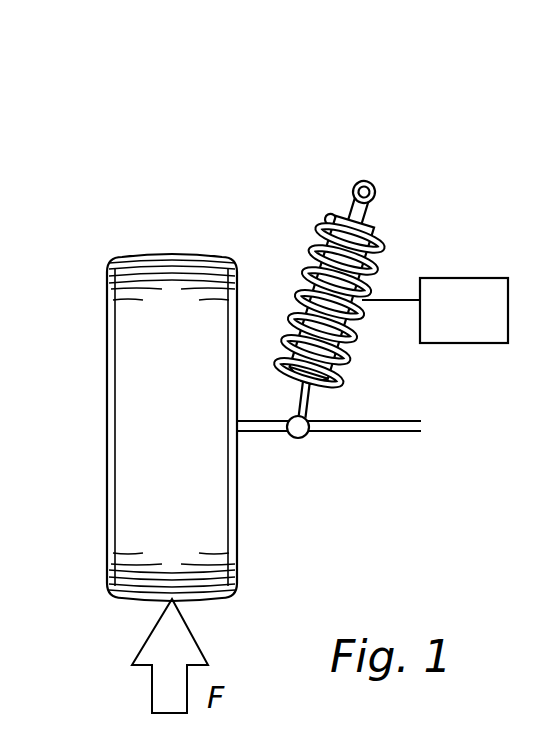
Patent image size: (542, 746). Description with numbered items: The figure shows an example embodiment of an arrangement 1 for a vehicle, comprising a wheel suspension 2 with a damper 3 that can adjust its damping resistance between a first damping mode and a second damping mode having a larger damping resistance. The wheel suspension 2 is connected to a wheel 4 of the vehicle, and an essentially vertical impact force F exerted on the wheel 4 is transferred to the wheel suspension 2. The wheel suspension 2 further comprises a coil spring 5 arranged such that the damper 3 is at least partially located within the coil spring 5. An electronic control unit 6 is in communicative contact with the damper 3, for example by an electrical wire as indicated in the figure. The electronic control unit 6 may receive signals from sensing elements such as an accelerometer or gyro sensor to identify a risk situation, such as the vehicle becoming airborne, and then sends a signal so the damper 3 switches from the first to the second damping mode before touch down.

The arrangement 1 is at (342, 92).
The wheel suspension 2 is at (288, 250).
The damper 3 is at (350, 226).
The wheel 4 is at (137, 382).
The coil spring 5 is at (385, 247).
The electronic control unit 6 is at (470, 345).